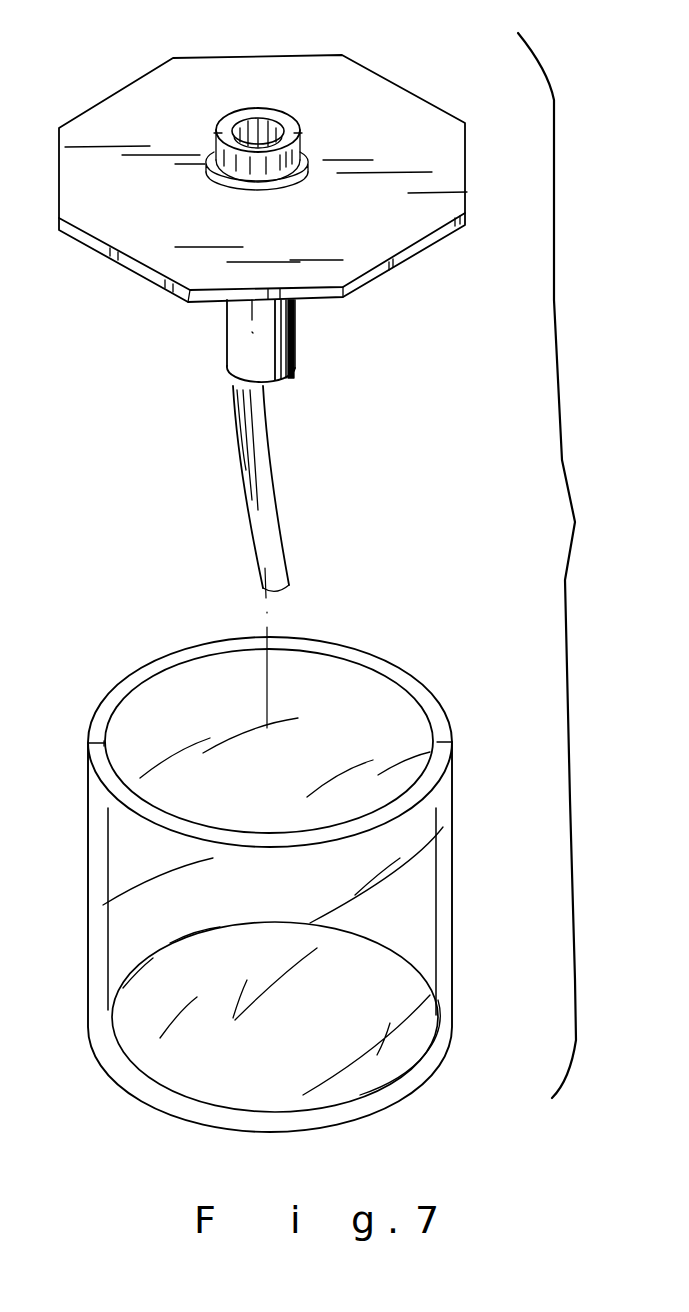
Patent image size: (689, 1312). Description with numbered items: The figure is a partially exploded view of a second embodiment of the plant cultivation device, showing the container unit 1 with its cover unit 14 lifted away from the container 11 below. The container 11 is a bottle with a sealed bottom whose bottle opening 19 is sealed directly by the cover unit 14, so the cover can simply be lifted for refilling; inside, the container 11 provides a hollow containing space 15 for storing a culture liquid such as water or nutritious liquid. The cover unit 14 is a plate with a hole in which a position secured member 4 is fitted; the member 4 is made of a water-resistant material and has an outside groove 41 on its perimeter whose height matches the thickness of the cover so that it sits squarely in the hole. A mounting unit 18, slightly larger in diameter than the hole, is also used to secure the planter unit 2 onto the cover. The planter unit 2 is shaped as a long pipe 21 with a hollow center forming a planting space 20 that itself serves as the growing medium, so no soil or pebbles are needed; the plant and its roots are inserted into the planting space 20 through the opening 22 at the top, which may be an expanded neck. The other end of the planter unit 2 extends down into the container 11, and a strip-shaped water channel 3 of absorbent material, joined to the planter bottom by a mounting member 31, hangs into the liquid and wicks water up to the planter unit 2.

The container unit 1 is at (309, 884).
The container 11 is at (437, 865).
The containing space 15 is at (395, 712).
The bottle opening 19 is at (433, 770).
The cover unit 14 is at (443, 203).
The planter unit 2 is at (258, 351).
The long pipe 21 is at (237, 315).
The mounting member 31 is at (287, 381).
The water channel 3 is at (258, 470).
The position secured member 4 is at (360, 106).
The outside groove 41 is at (323, 160).
The mounting unit 18 is at (346, 49).
The planting space 20 is at (254, 140).
The opening 22 is at (300, 150).